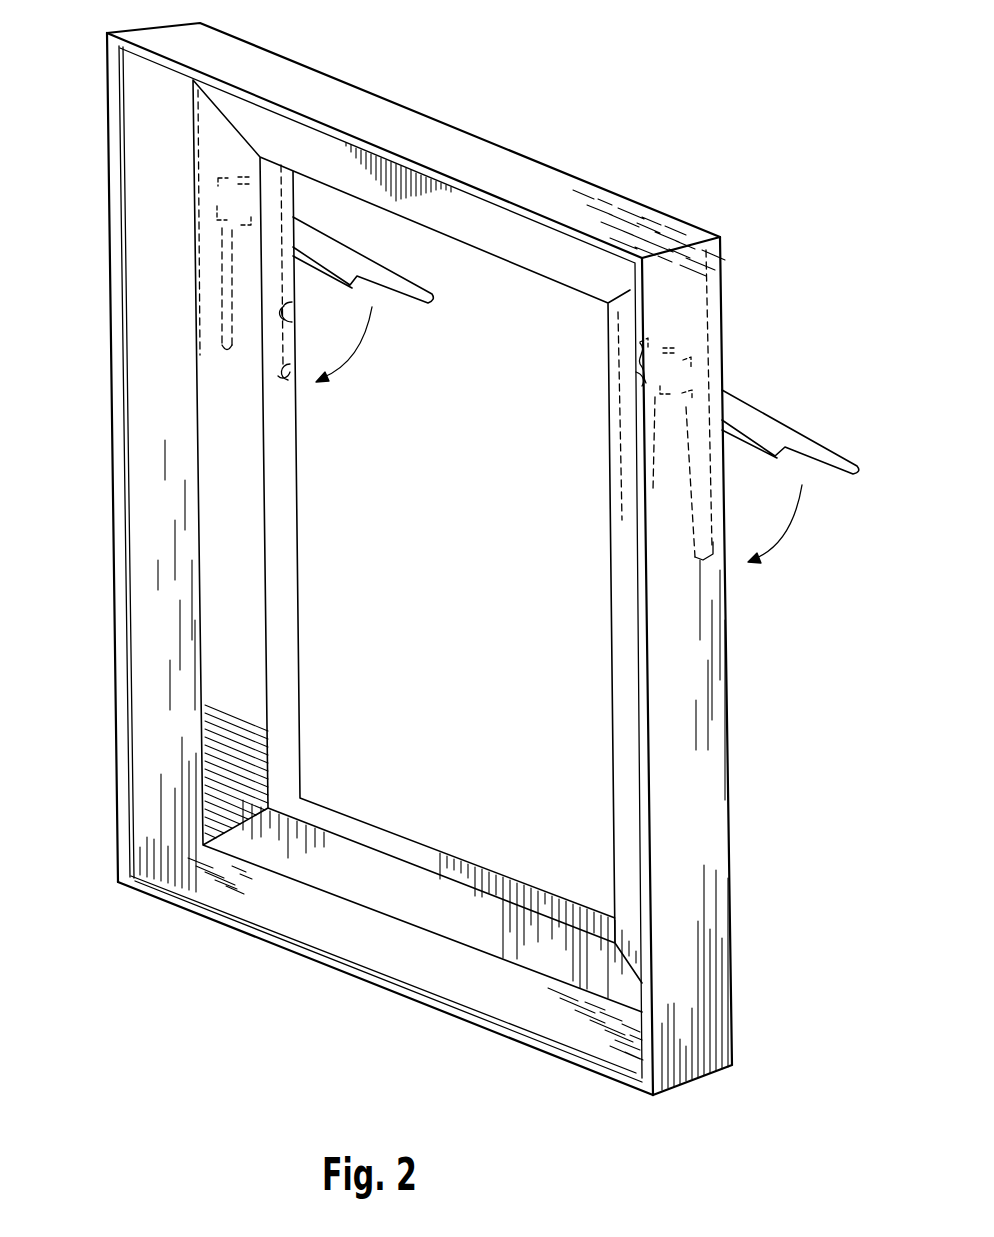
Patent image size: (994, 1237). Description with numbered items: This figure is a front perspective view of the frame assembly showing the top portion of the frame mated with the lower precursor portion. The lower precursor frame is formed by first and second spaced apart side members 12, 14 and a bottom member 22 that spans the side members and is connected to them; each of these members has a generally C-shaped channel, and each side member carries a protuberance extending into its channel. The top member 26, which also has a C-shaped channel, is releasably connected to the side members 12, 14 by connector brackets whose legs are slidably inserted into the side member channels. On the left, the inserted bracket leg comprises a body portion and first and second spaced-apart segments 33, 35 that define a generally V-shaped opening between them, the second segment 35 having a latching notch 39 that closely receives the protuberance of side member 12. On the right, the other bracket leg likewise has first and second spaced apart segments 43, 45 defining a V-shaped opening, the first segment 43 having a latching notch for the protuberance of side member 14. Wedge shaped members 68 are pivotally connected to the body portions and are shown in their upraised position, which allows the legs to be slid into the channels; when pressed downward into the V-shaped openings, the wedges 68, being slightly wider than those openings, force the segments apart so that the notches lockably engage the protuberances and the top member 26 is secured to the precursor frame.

The first side member 12 is at (115, 587).
The second side member 14 is at (690, 833).
The bottom member 22 is at (335, 968).
The top member 26 is at (440, 145).
The first segment 33 is at (200, 340).
The second segment 35 is at (270, 368).
The latching notch 39 is at (288, 318).
The first segment 43 is at (627, 517).
The second segment 45 is at (692, 473).
The wedge shaped member 68 is at (417, 292).